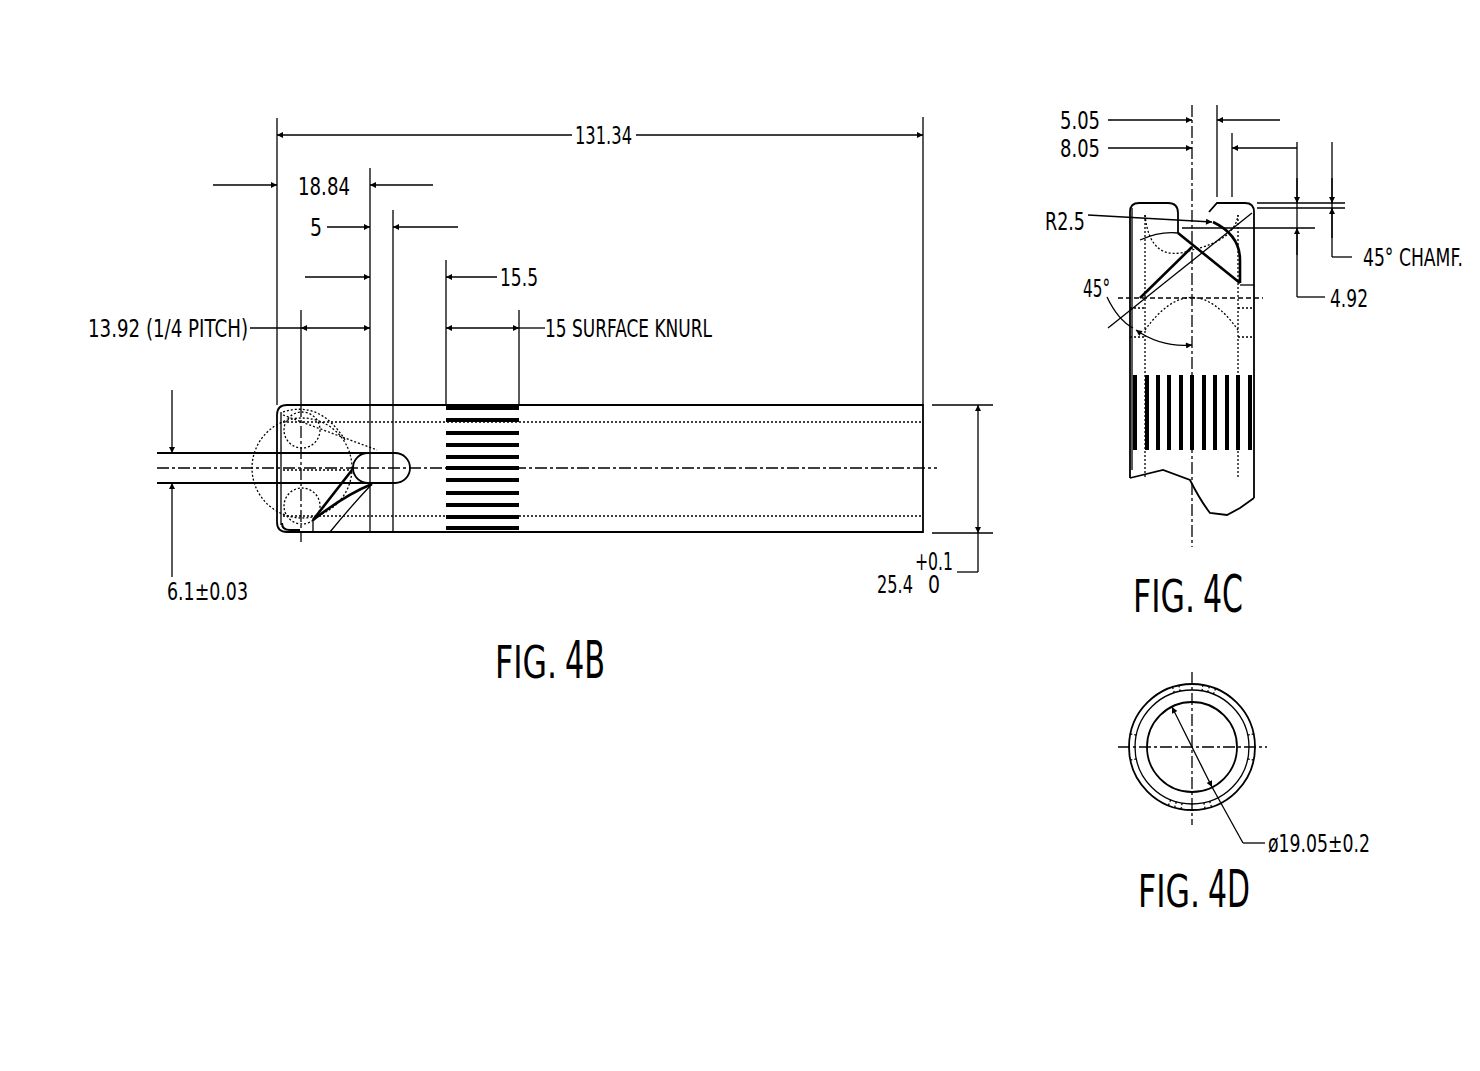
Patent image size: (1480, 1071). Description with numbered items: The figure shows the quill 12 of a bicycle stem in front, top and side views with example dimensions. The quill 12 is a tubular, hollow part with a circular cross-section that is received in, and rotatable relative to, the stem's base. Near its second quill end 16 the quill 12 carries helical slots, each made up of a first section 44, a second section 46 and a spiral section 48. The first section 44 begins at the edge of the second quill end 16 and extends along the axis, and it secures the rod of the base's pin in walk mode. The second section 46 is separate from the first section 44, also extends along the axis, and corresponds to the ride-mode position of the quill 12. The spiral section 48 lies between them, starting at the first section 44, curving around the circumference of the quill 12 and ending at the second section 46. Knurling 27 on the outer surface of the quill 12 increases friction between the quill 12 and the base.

In FIG. 4B, the quill 12 is at (943, 362).
In FIG. 4C, the quill 12 is at (1102, 80).
In FIG. 4D, the quill 12 is at (1107, 758).
In FIG. 4B, the second quill end 16 is at (280, 534).
In FIG. 4C, the second quill end 16 is at (1140, 206).
In FIG. 4B, the knurling 27 is at (488, 534).
In FIG. 4C, the knurling 27 is at (1130, 422).
In FIG. 4C, the first section 44 is at (1147, 237).
In FIG. 4B, the second section 46 is at (388, 487).
In FIG. 4B, the spiral section 48 is at (345, 527).
In FIG. 4C, the spiral section 48 is at (1248, 273).